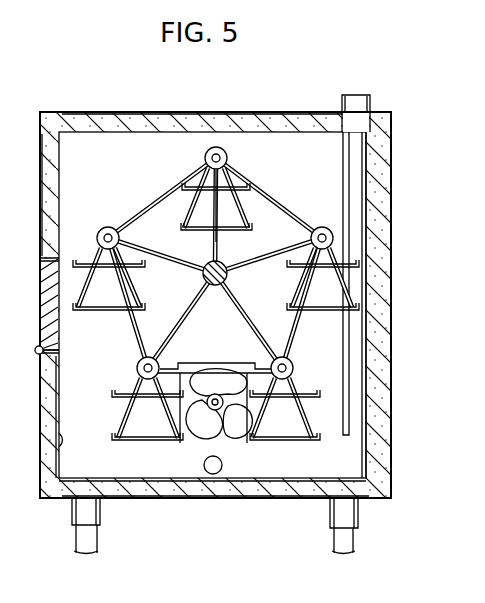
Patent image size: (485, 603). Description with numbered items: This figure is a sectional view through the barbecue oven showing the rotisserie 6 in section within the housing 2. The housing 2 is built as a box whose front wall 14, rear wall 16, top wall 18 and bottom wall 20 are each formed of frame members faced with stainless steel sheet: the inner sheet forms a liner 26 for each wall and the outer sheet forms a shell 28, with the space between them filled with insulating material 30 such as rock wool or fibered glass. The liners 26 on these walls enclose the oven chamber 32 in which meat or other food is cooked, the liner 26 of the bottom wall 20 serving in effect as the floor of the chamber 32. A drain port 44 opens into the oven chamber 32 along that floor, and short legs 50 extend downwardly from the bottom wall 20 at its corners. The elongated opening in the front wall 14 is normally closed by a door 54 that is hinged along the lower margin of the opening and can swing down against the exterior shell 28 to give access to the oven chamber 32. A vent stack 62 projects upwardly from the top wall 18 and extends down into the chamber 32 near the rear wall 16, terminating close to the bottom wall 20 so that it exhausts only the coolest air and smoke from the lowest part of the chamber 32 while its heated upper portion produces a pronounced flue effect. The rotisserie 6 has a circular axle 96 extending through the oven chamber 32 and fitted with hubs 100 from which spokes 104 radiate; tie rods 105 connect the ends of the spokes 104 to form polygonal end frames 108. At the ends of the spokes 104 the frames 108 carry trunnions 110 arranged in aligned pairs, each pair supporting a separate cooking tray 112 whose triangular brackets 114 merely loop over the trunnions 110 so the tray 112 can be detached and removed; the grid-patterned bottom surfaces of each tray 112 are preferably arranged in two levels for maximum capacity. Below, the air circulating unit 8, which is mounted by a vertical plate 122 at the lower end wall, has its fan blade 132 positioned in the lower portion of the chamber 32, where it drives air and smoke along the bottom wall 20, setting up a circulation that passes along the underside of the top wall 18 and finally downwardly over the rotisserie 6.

The housing 2 is at (278, 106).
The rotisserie 6 is at (184, 166).
The air circulating unit 8 is at (206, 460).
The front wall 14 is at (40, 155).
The rear wall 16 is at (394, 232).
The top wall 18 is at (166, 112).
The bottom wall 20 is at (282, 500).
The liner 26 is at (58, 442).
The shell 28 is at (40, 430).
The insulating material 30 is at (154, 490).
The oven chamber 32 is at (100, 343).
The drain port 44 is at (214, 476).
The legs 50 is at (78, 518).
The door 54 is at (40, 284).
The vent stack 62 is at (360, 94).
The axle 96 is at (218, 287).
The hubs 100 is at (203, 278).
The spokes 104 is at (266, 262).
The tie rods 105 is at (152, 204).
The end frames 108 is at (276, 184).
The trunnions 110 is at (104, 228).
The cooking trays 112 is at (308, 388).
The triangular brackets 114 is at (124, 410).
The vertical plate 122 is at (244, 436).
The fan blade 132 is at (204, 434).